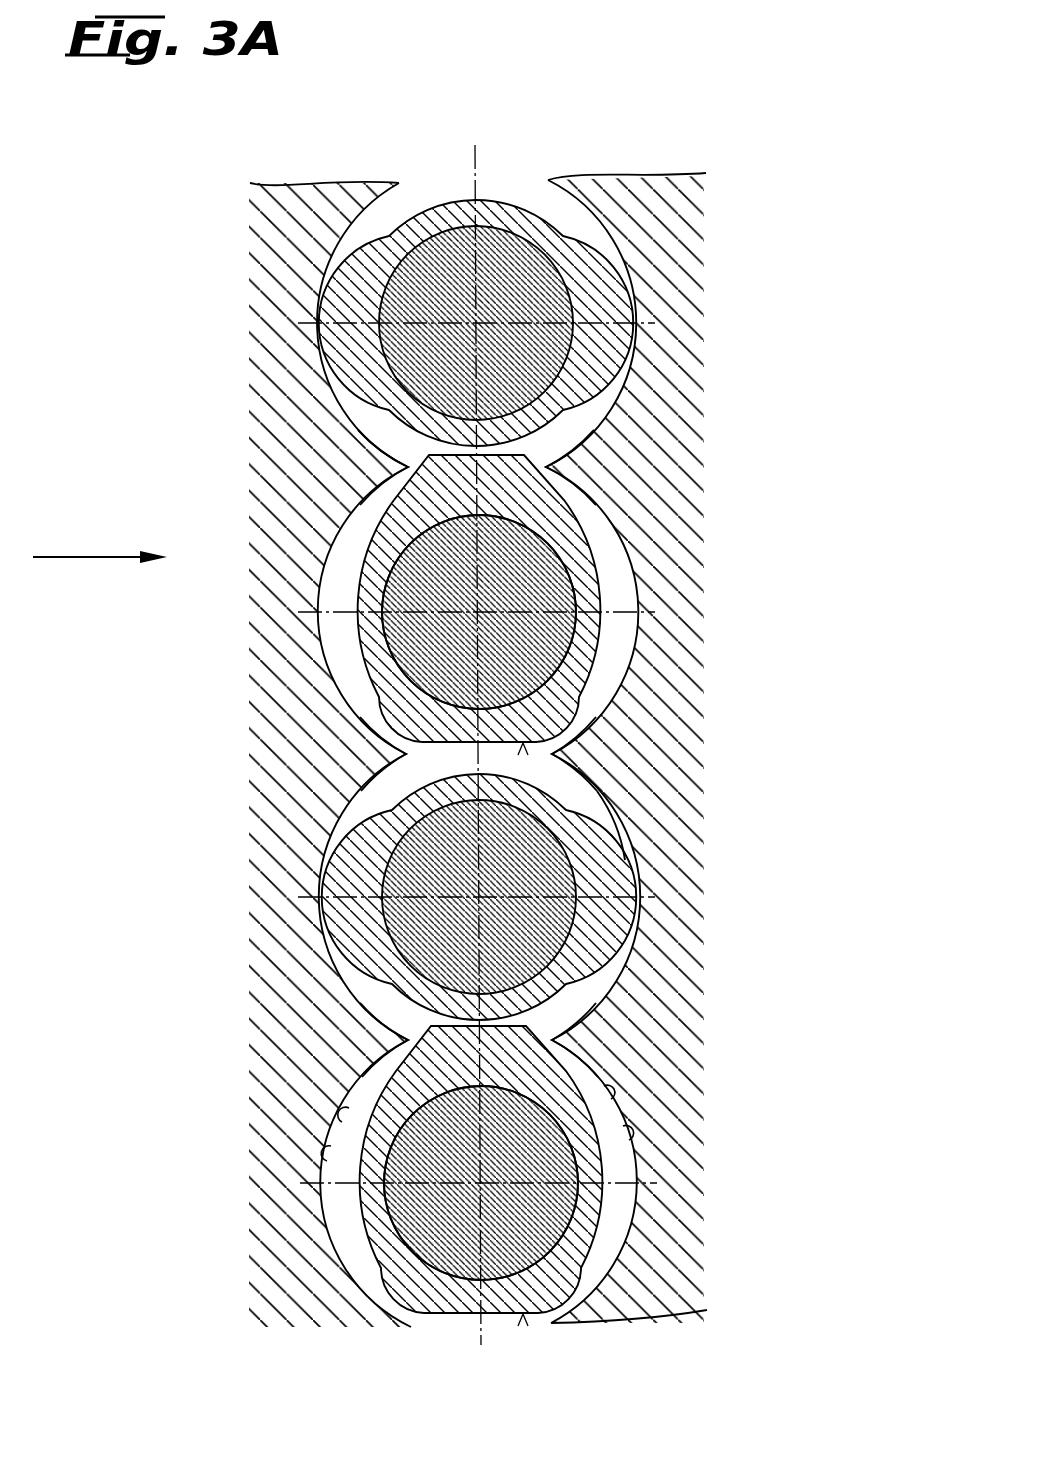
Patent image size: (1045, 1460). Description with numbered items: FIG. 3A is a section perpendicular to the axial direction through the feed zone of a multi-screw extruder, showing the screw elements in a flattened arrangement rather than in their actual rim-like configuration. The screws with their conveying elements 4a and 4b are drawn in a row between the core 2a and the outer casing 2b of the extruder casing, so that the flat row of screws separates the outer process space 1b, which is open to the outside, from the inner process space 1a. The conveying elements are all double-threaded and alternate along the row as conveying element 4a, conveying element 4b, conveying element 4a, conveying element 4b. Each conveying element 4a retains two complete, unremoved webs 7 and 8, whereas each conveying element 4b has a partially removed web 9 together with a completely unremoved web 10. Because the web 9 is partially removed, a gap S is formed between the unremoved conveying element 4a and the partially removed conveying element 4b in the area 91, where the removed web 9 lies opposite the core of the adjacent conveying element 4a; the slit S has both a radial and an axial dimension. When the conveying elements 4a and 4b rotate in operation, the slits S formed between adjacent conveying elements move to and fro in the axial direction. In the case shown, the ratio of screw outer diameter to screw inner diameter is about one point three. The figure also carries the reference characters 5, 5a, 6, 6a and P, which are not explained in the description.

The inner process space 1a is at (706, 173).
The outer process space 1b is at (250, 183).
The core 2a is at (662, 677).
The outer casing 2b is at (287, 633).
The conveying element 4a is at (583, 412).
The conveying element 4b is at (607, 633).
The projection 5 is at (604, 1090).
The projection 5a is at (628, 1135).
The projection 6 is at (340, 1115).
The projection 6a is at (326, 1154).
The web 7 is at (612, 292).
The web 8 is at (340, 345).
The partially removed web 9 is at (398, 710).
The completely unremoved web 10 is at (494, 463).
The area 91 is at (497, 765).
The gap S is at (603, 798).
The pressing force P is at (100, 541).